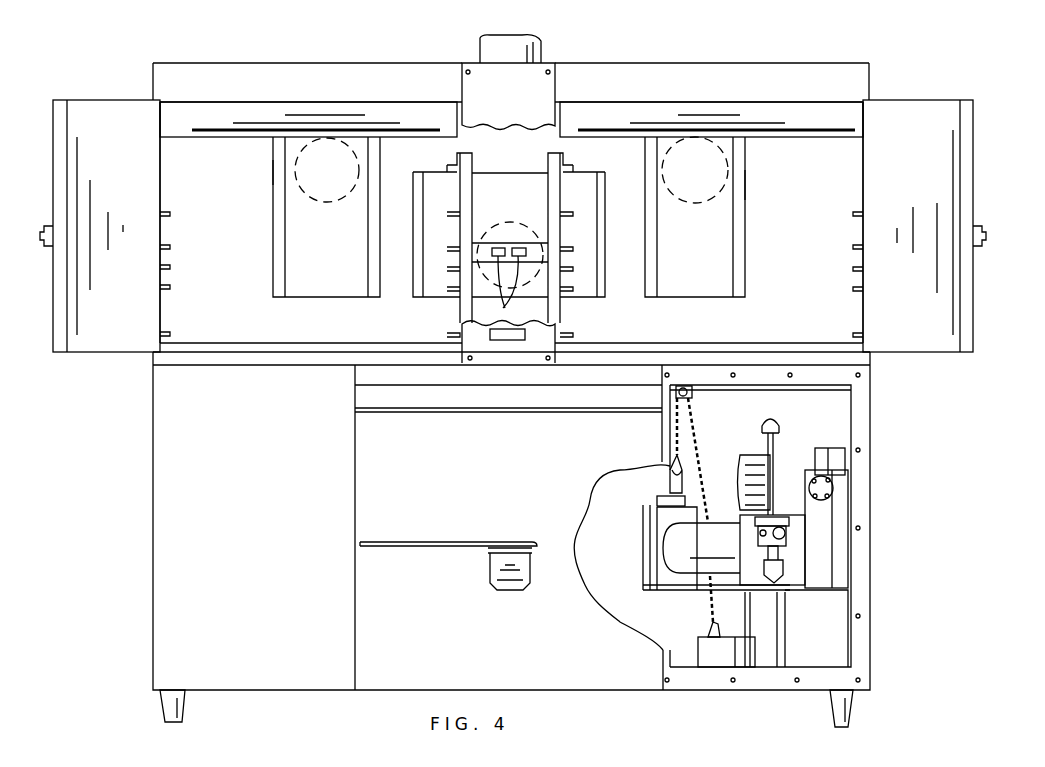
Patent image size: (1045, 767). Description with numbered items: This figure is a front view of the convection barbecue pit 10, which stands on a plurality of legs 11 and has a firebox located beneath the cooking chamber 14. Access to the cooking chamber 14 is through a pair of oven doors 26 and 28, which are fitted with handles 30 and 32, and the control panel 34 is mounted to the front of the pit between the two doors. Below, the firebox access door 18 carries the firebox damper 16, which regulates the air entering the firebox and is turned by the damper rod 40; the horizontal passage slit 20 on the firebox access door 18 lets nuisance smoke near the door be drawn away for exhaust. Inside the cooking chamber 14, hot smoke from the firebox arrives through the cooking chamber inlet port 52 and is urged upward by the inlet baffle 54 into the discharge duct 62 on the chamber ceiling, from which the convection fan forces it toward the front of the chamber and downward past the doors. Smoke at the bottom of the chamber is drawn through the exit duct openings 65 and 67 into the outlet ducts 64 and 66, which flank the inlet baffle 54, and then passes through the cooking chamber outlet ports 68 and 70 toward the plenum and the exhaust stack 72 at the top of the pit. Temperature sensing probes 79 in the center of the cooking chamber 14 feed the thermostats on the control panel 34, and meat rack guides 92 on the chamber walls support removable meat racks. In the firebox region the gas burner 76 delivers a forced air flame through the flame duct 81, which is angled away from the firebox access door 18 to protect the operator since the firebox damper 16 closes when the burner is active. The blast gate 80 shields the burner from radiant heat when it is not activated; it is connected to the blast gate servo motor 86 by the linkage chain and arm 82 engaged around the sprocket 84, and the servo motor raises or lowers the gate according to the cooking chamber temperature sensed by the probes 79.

The convection barbecue pit 10 is at (866, 42).
The legs 11 is at (162, 710).
The cooking chamber 14 is at (233, 257).
The firebox damper 16 is at (509, 581).
The firebox access door 18 is at (355, 450).
The horizontal passage slit 20 is at (442, 411).
The oven door 26 is at (905, 100).
The oven door 28 is at (132, 100).
The handle 30 is at (982, 244).
The handle 32 is at (42, 244).
The control panel 34 is at (552, 80).
The damper rod 40 is at (455, 546).
The cooking chamber inlet port 52 is at (506, 228).
The inlet baffle 54 is at (577, 298).
The discharge duct 62 is at (407, 112).
The outlet duct 64 is at (746, 190).
The exit duct opening 65 is at (697, 298).
The outlet duct 66 is at (273, 173).
The exit duct opening 67 is at (296, 298).
The cooking chamber outlet port 68 is at (690, 204).
The cooking chamber outlet port 70 is at (331, 202).
The exhaust stack 72 is at (481, 46).
The gas burner 76 is at (785, 468).
The temperature sensing probes 79 is at (506, 302).
The blast gate 80 is at (648, 488).
The flame duct 81 is at (718, 553).
The linkage chain and arm 82 is at (700, 428).
The sprocket 84 is at (694, 409).
The blast gate servo motor 86 is at (703, 648).
The meat rack guides 92 is at (450, 289).